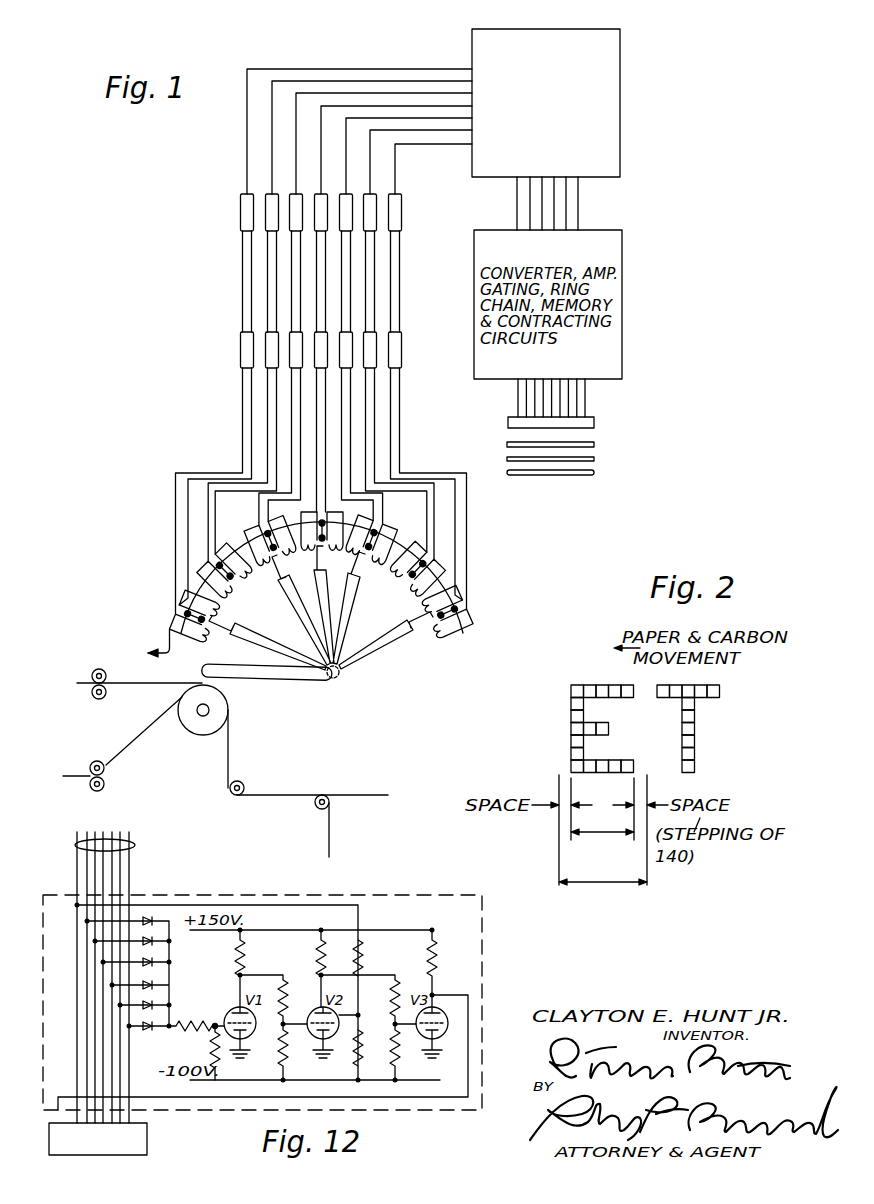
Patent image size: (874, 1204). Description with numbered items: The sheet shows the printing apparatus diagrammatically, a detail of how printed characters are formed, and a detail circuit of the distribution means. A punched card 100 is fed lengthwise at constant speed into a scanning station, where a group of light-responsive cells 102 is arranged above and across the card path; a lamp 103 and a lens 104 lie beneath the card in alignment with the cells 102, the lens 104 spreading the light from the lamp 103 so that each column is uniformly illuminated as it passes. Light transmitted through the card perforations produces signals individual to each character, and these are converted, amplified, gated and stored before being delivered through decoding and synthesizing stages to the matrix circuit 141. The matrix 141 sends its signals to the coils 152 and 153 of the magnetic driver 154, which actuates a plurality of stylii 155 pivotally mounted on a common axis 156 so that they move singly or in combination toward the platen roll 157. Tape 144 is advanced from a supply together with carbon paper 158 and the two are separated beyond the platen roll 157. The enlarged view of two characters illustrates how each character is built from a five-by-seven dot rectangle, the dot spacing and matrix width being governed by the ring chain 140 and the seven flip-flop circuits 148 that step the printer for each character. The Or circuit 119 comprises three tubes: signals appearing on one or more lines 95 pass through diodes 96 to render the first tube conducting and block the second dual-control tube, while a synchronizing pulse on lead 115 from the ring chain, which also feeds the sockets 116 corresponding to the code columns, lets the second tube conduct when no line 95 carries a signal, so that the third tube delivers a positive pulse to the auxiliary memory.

In FIG. 1, the matrix circuit 141 is at (618, 133).
In FIG. 1, the light-responsive cells 102 is at (594, 422).
In FIG. 1, the punched card 100 is at (507, 444).
In FIG. 1, the lens 104 is at (507, 461).
In FIG. 1, the lamp 103 is at (512, 475).
In FIG. 1, the coil 152 is at (173, 632).
In FIG. 1, the coil 153 is at (188, 606).
In FIG. 1, the magnetic driver 154 is at (343, 673).
In FIG. 1, the stylii 155 is at (263, 678).
In FIG. 1, the common axis 156 is at (333, 678).
In FIG. 1, the platen roll 157 is at (200, 735).
In FIG. 1, the carbon paper 158 is at (77, 683).
In FIG. 1, the tape 144 is at (70, 777).
In FIG. 2, the ring chain 140 is at (616, 830).
In FIG. 2, the flip-flop circuits 148 is at (621, 894).
In FIG. 12, the leads 115 is at (77, 864).
In FIG. 12, the lines 95 is at (133, 846).
In FIG. 12, the Or circuit 119 is at (234, 895).
In FIG. 12, the diodes 96 is at (152, 962).
In FIG. 12, the sockets 116 is at (147, 1140).